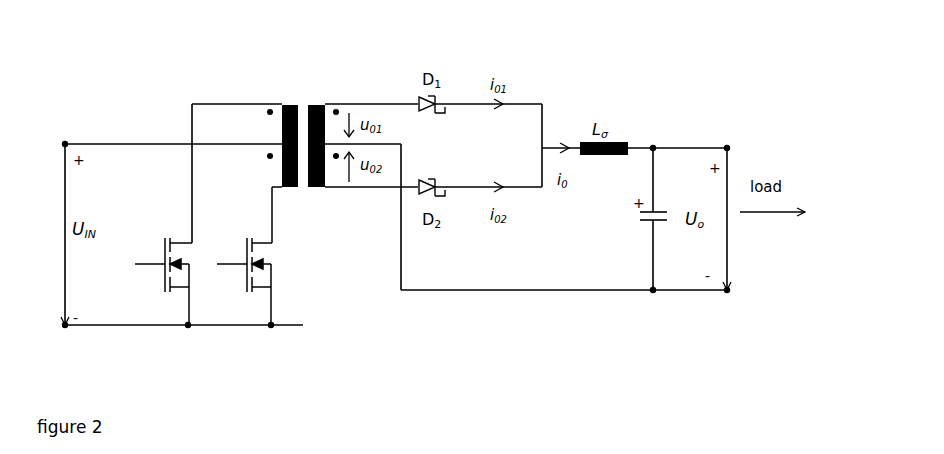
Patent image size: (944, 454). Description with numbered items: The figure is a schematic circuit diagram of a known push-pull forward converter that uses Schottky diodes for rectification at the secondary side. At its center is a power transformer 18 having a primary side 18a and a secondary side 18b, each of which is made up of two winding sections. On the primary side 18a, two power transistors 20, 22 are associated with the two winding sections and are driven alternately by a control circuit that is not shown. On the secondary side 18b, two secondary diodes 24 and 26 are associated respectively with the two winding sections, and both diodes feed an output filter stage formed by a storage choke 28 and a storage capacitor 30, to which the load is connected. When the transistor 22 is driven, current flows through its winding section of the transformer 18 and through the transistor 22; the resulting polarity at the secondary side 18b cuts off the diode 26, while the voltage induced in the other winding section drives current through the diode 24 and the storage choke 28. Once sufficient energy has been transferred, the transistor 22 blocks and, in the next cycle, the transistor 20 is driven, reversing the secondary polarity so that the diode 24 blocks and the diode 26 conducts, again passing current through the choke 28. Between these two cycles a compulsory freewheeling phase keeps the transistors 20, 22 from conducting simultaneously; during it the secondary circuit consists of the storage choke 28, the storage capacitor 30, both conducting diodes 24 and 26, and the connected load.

The power transformer 18 is at (305, 80).
The primary side 18a is at (288, 104).
The secondary side 18b is at (320, 104).
The power transistor 20 is at (157, 221).
The power transistor 22 is at (244, 221).
The secondary diode 24 is at (454, 57).
The secondary diode 26 is at (452, 167).
The storage choke 28 is at (625, 110).
The storage capacitor 30 is at (667, 197).